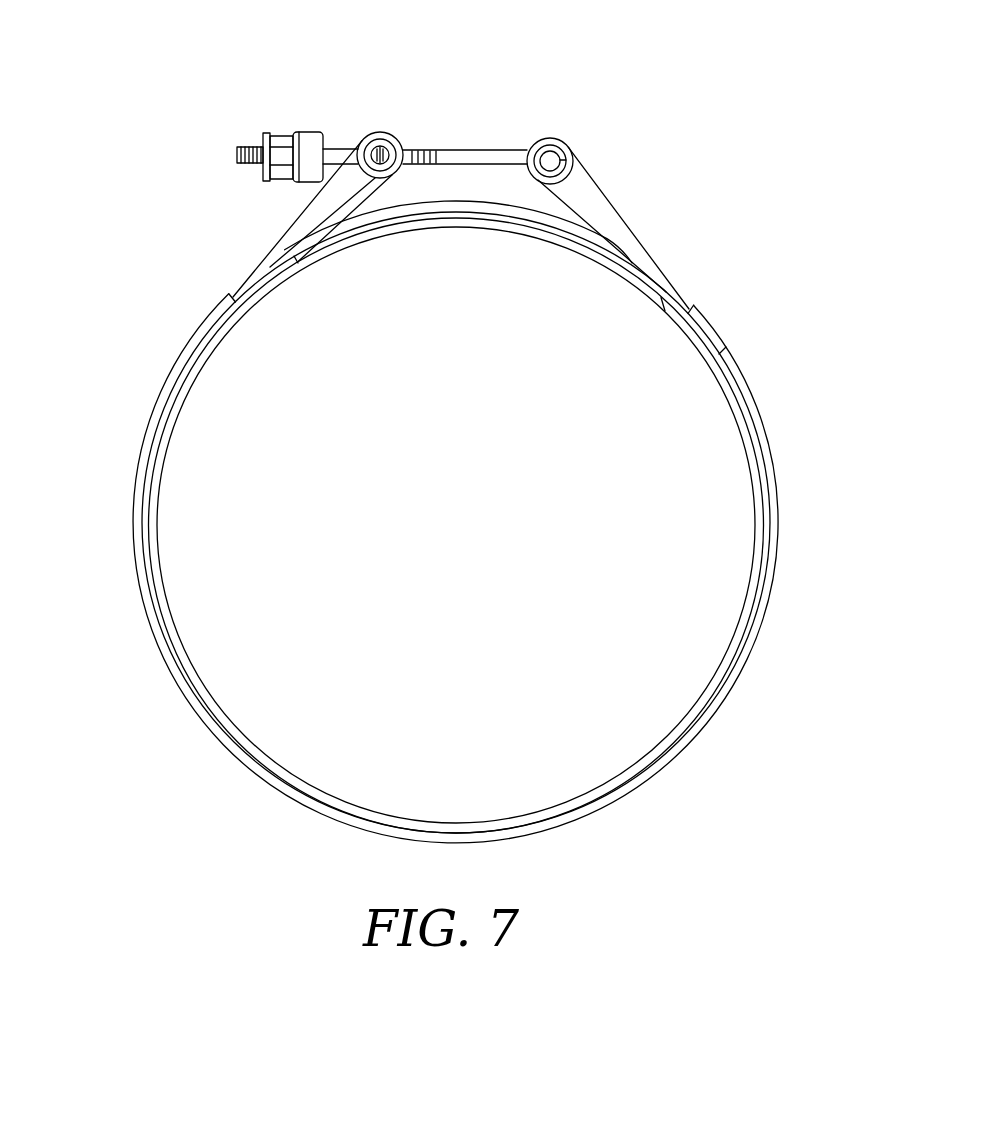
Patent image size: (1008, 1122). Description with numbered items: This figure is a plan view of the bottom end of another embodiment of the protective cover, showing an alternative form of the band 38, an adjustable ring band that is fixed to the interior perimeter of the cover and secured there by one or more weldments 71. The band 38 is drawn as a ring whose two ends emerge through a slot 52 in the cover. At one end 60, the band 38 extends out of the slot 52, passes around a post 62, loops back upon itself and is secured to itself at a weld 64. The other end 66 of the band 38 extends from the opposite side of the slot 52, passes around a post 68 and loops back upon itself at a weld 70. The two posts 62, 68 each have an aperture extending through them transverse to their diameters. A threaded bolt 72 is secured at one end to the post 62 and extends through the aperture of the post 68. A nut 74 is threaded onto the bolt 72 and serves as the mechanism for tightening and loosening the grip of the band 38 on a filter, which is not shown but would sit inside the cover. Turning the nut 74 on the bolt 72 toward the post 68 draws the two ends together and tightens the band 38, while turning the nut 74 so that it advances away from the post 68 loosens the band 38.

The band 38 is at (713, 370).
The slot 52 is at (232, 296).
The one end of band 60 is at (632, 200).
The post 62 is at (558, 140).
The weld 64 is at (654, 278).
The other end of band 66 is at (265, 216).
The post 68 is at (386, 133).
The weld 70 is at (272, 266).
The weldments 71 is at (170, 648).
The threaded bolt 72 is at (473, 150).
The nut 74 is at (285, 129).